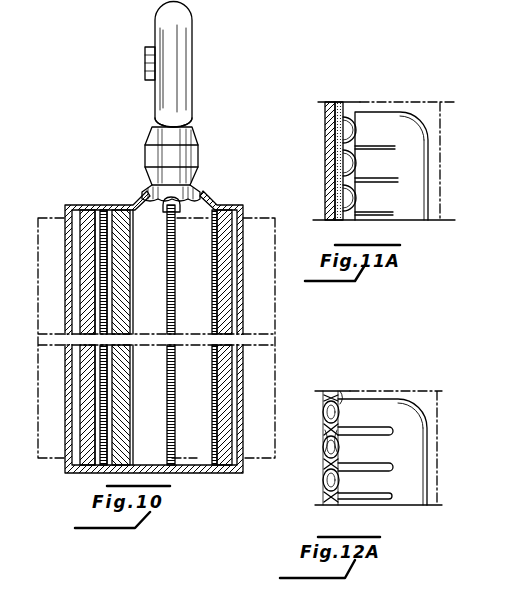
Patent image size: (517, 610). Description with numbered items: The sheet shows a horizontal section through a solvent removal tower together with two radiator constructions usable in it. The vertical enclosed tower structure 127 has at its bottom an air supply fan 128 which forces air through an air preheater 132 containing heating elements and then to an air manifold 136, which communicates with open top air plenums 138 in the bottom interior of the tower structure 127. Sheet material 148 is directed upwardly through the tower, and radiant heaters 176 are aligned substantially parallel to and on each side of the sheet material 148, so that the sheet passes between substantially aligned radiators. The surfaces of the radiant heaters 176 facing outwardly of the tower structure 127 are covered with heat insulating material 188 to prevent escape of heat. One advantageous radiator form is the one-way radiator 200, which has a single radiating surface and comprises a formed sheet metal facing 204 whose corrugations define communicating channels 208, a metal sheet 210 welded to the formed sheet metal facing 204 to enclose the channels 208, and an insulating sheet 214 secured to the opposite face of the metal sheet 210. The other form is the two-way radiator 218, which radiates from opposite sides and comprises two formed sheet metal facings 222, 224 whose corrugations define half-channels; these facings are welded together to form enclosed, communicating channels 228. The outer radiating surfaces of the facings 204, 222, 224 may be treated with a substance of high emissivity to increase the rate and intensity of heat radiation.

In FIG. 10, the tower structure 127 is at (143, 467).
In FIG. 10, the air supply fan 128 is at (157, 40).
In FIG. 10, the air preheater 132 is at (196, 153).
In FIG. 10, the air manifold 136 is at (195, 190).
In FIG. 10, the air plenums 138 is at (163, 243).
In FIG. 10, the sheet material 148 is at (172, 258).
In FIG. 10, the radiant heaters 176 is at (212, 296).
In FIG. 10, the heat insulating material 188 is at (87, 368).
In FIG. 11A, the one-way radiator 200 is at (388, 100).
In FIG. 11A, the formed sheet metal facing 204 is at (428, 105).
In FIG. 11A, the communicating channels 208 is at (348, 118).
In FIG. 11A, the metal sheet 210 is at (337, 163).
In FIG. 11A, the insulating sheet 214 is at (327, 132).
In FIG. 12A, the two-way radiator 218 is at (414, 379).
In FIG. 12A, the formed sheet metal facing 222 is at (340, 396).
In FIG. 12A, the formed sheet metal facing 224 is at (338, 436).
In FIG. 12A, the communicating channels 228 is at (330, 475).